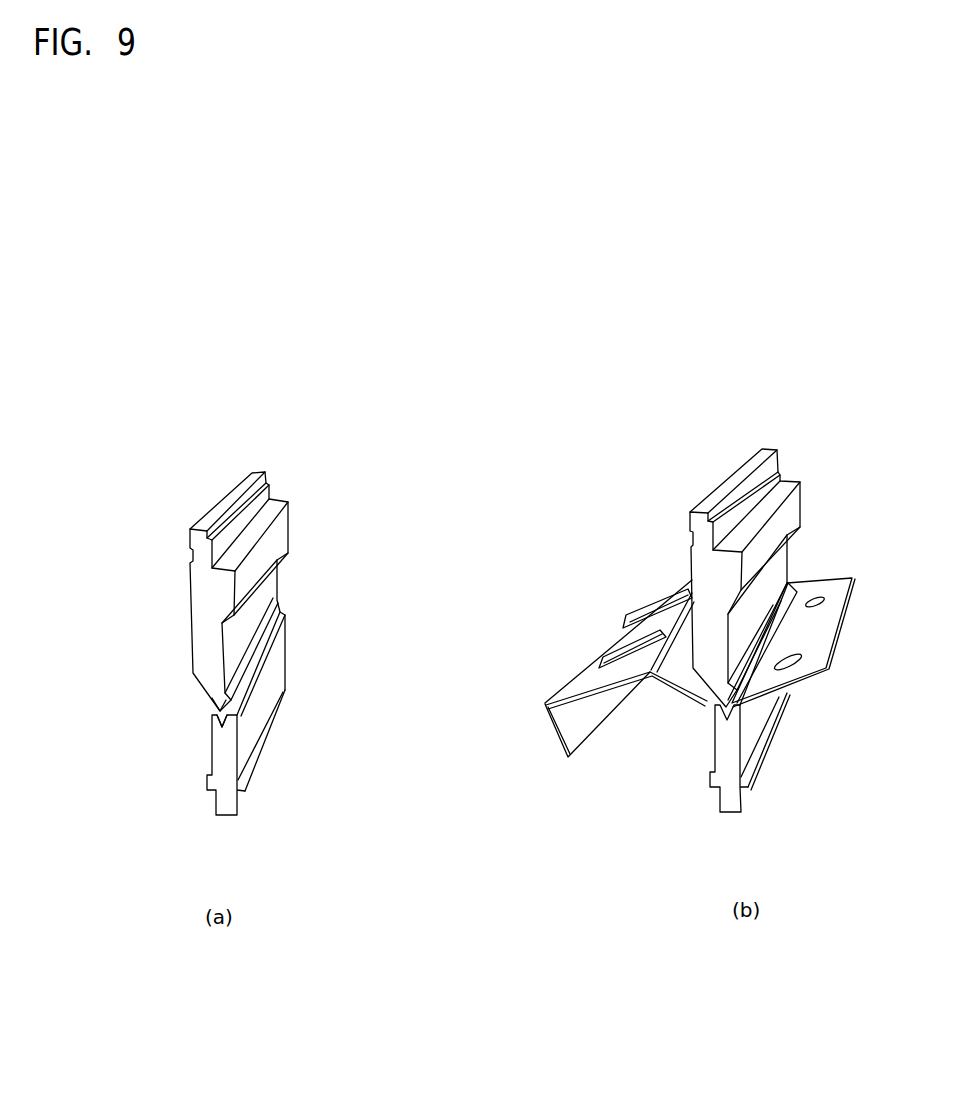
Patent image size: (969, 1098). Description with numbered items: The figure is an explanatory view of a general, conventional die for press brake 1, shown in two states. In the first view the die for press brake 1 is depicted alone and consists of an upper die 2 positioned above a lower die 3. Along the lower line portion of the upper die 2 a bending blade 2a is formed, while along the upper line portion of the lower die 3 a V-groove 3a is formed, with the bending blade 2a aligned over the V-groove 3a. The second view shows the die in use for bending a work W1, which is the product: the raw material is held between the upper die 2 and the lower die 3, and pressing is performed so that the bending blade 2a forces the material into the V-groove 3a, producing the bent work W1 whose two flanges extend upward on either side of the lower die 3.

The die for press brake 1 is at (322, 473).
The upper die 2 is at (202, 585).
The bending blade 2a is at (217, 709).
The lower die 3 is at (223, 751).
The V-groove 3a is at (237, 715).
The work W1 is at (818, 628).